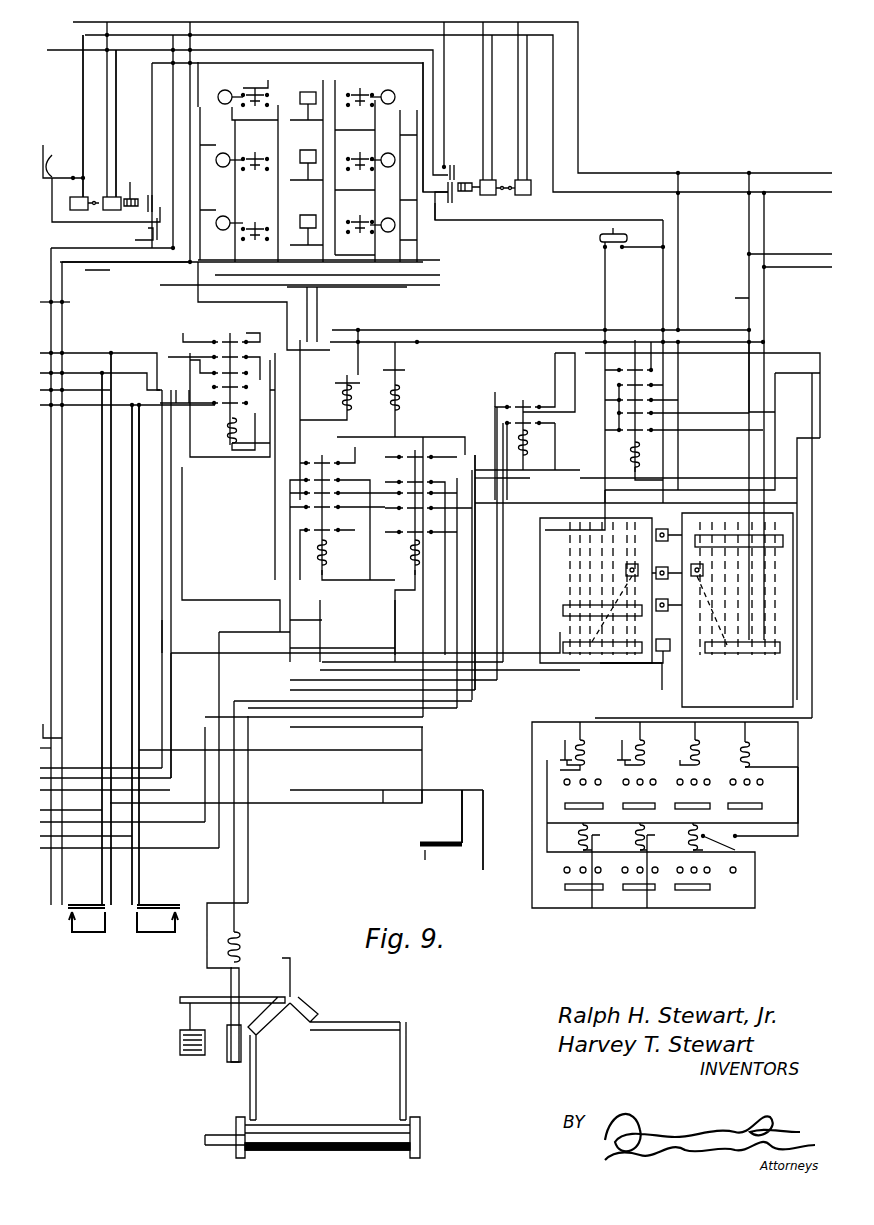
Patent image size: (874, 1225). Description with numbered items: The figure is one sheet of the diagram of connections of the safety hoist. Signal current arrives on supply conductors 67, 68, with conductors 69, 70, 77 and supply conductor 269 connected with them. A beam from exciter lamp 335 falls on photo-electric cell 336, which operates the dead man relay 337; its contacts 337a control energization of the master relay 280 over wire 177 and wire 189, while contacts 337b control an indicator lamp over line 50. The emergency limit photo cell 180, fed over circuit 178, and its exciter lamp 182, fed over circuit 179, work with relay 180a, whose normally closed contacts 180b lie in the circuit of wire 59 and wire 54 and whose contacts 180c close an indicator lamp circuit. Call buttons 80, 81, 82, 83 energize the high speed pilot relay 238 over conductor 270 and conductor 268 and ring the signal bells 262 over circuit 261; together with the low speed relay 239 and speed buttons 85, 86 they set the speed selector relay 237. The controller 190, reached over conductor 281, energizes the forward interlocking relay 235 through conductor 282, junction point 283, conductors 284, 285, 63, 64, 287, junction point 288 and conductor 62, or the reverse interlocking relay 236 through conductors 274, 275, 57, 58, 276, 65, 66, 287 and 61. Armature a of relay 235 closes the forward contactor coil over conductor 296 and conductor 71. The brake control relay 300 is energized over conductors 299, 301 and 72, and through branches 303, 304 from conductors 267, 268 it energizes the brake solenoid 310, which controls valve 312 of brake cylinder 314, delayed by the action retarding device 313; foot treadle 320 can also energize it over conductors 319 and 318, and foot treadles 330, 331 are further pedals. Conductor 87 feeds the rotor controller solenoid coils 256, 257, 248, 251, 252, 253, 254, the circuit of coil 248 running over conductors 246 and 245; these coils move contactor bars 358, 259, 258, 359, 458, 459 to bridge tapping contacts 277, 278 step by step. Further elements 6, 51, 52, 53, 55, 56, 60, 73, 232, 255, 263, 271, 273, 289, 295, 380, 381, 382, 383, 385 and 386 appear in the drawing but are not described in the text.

The switch 6 is at (600, 240).
The line 50 is at (452, 70).
The conductor 51 is at (62, 150).
The conductor 52 is at (103, 183).
The conductor 53 is at (190, 42).
The wire 54 is at (65, 302).
The conductor 55 is at (46, 344).
The conductor 56 is at (100, 372).
The conductor 57 is at (75, 381).
The conductor 58 is at (46, 416).
The emergency limit circuit wire 59 is at (50, 722).
The conductor 60 is at (51, 736).
The conductor 61 is at (162, 445).
The conductor 62 is at (165, 622).
The conductor 63 is at (45, 812).
The conductor 64 is at (60, 822).
The conductor 65 is at (86, 825).
The conductor 66 is at (45, 850).
The supply conductor 67 is at (290, 32).
The supply conductor 68 is at (318, 35).
The conductor 69 is at (792, 243).
The conductor 70 is at (318, 790).
The conductor 71 is at (826, 383).
The conductor 72 is at (826, 443).
The conductor 73 is at (826, 508).
The conductor 77 is at (705, 440).
The call button 80 is at (250, 90).
The call button 81 is at (368, 92).
The call button 82 is at (256, 146).
The call button 83 is at (356, 146).
The speed push button 85 is at (256, 238).
The speed push button 86 is at (352, 232).
The conductor 87 is at (812, 640).
The wire 177 is at (678, 240).
The circuit 178 is at (116, 118).
The circuit 179 is at (92, 118).
The photo cell 180 is at (112, 210).
The relay 180a is at (137, 182).
The contacts 180b is at (152, 193).
The contacts 180c is at (126, 232).
The exciter lamp 182 is at (78, 210).
The wire 189 is at (152, 84).
The controller 190 is at (686, 667).
The conductor 232 is at (432, 368).
The forward interlocking relay 235 is at (342, 554).
The reverse interlocking relay 236 is at (415, 590).
The speed selector relay 237 is at (228, 438).
The high speed pilot relay 238 is at (330, 420).
The low speed relay 239 is at (410, 403).
The conductor 245 is at (322, 627).
The conductor 246 is at (205, 600).
The solenoid coil 248 is at (578, 748).
The solenoid coil 251 is at (574, 834).
The solenoid coil 252 is at (640, 835).
The solenoid coil 253 is at (693, 835).
The solenoid coil 254 is at (752, 752).
The relay panel 255 is at (740, 830).
The solenoid coil 256 is at (700, 740).
The solenoid coil 257 is at (648, 740).
The contactor bar 258 is at (586, 794).
The contactor bar 259 is at (645, 794).
The circuit 261 is at (258, 90).
The signal bell 262 is at (315, 152).
The conductor 263 is at (375, 190).
The conductor 267 is at (440, 330).
The conductor 268 is at (546, 325).
The supply conductor 269 is at (317, 316).
The conductor 270 is at (205, 200).
The conductor 271 is at (407, 289).
The conductor 273 is at (440, 620).
The conductor 274 is at (690, 512).
The conductor 275 is at (139, 565).
The conductor 276 is at (132, 530).
The tapping contact 277 is at (749, 368).
The tapping contact 278 is at (584, 758).
The master relay 280 is at (640, 455).
The conductor 281 is at (600, 478).
The conductor 282 is at (540, 653).
The junction point 283 is at (120, 806).
The conductor 284 is at (111, 665).
The conductor 285 is at (102, 510).
The conductor 287 is at (193, 653).
The junction point 288 is at (158, 648).
The conductor 289 is at (478, 542).
The conductor 295 is at (300, 643).
The conductor 296 is at (540, 475).
The conductor 299 is at (570, 372).
The brake control relay 300 is at (527, 440).
The conductor 301 is at (800, 353).
The branch 303 is at (495, 400).
The branch 304 is at (500, 628).
The brake solenoid 310 is at (240, 945).
The valve 312 is at (295, 1003).
The action retarding device 313 is at (228, 1055).
The brake cylinder 314 is at (320, 1150).
The conductor 318 is at (478, 560).
The conductor 319 is at (466, 822).
The foot treadle 320 is at (435, 832).
The foot treadle 330 is at (152, 903).
The foot treadle 331 is at (85, 903).
The exciter lamp 335 is at (524, 195).
The photo-electric cell 336 is at (488, 195).
The dead man relay 337 is at (467, 183).
The contacts 337a is at (452, 205).
The contacts 337b is at (453, 164).
The contactor bar 358 is at (697, 794).
The contactor bar 359 is at (753, 794).
The lamp 380 is at (216, 91).
The lamp 381 is at (399, 88).
The lamp 382 is at (220, 158).
The lamp 383 is at (394, 147).
The lamp 385 is at (222, 232).
The lamp 386 is at (395, 230).
The contactor bar 458 is at (571, 888).
The contactor bar 459 is at (674, 888).